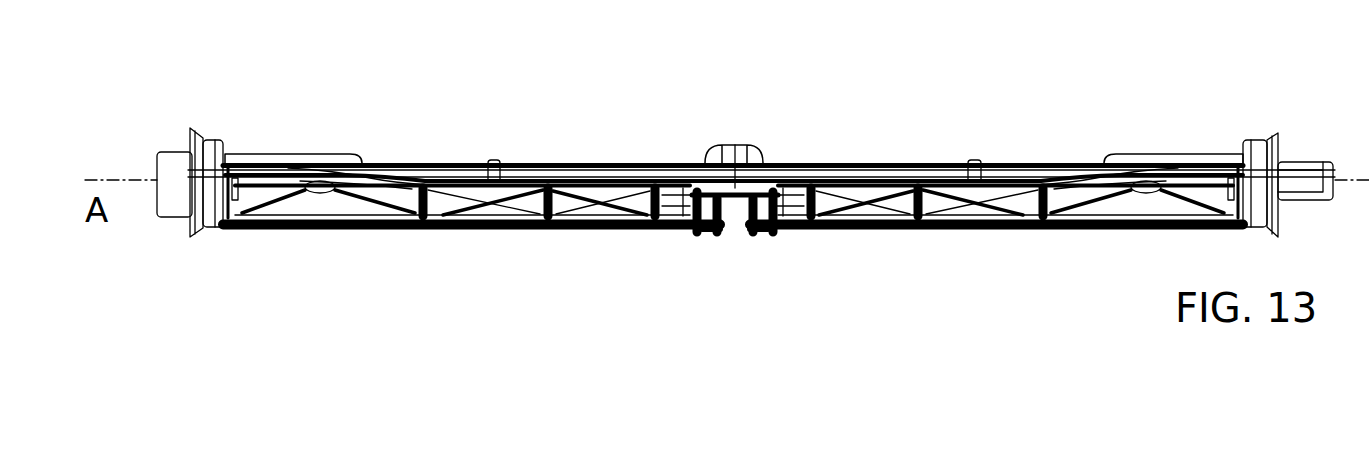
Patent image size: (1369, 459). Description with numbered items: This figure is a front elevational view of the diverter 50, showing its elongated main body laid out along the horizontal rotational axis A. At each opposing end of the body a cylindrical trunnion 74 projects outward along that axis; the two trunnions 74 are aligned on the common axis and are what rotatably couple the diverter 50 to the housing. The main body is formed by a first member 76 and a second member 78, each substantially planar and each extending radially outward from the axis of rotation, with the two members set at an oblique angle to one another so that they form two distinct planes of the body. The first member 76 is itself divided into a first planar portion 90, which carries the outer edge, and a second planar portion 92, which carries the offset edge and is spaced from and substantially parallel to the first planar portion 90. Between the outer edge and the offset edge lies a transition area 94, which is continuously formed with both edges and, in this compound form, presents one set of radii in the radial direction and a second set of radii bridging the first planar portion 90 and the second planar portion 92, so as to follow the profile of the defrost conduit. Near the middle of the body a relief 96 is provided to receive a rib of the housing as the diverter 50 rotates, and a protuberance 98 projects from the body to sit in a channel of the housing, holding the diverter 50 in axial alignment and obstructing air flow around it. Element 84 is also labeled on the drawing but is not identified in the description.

The diverter 50 is at (457, 86).
The trunnions 74 is at (173, 150).
The first member 76 is at (535, 163).
The second member 78 is at (923, 224).
The end flange 84 is at (200, 131).
The first planar portion 90 is at (572, 179).
The second planar portion 92 is at (297, 163).
The transition area 94 is at (374, 172).
The relief 96 is at (737, 216).
The protuberance 98 is at (737, 147).